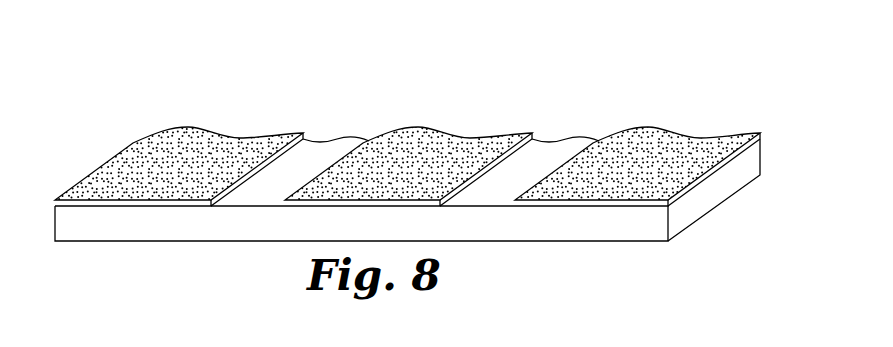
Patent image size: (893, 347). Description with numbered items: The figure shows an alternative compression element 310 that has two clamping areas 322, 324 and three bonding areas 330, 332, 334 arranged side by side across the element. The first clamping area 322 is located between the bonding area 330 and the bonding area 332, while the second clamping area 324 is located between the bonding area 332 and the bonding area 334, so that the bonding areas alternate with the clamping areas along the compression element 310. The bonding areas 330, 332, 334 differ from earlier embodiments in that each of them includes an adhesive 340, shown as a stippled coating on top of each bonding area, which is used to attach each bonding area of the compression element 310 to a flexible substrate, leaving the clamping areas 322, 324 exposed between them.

The compression element 310 is at (431, 125).
The clamping area 322 is at (315, 148).
The clamping area 324 is at (560, 148).
The bonding area 330 is at (197, 108).
The bonding area 332 is at (424, 110).
The bonding area 334 is at (649, 112).
The adhesive 340 is at (148, 137).